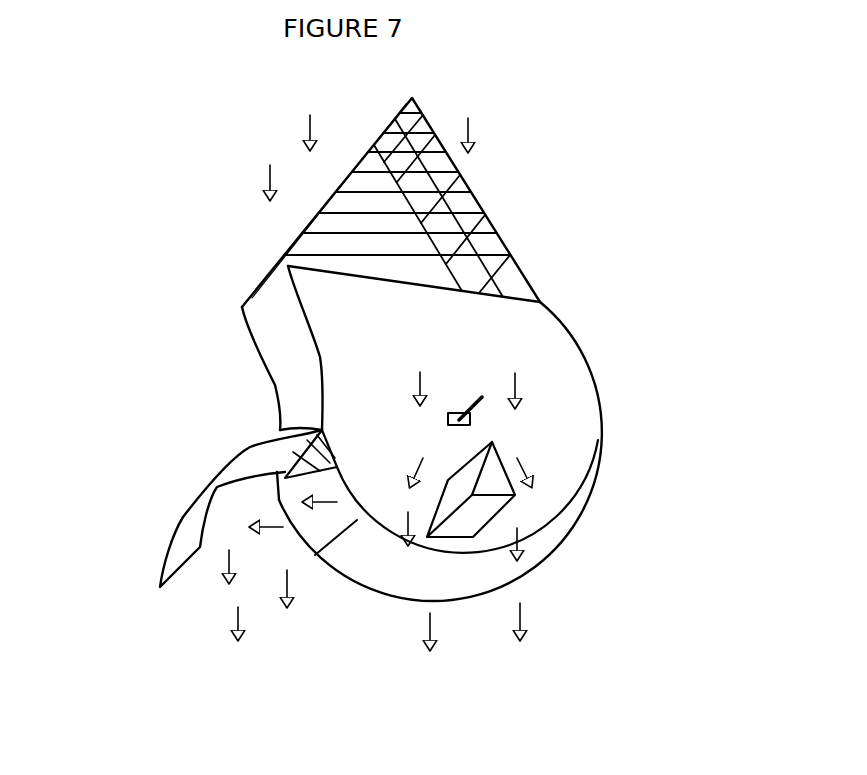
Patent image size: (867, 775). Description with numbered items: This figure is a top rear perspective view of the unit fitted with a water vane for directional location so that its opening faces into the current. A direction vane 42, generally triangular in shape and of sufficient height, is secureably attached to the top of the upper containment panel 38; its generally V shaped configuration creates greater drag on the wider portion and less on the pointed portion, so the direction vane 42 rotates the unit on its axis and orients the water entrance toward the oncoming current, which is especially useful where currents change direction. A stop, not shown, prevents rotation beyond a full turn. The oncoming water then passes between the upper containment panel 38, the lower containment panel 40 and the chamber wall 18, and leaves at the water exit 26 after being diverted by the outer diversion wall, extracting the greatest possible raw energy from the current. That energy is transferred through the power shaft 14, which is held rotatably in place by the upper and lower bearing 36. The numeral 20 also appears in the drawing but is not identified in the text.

The power shaft 14 is at (512, 258).
The chamber wall 18 is at (446, 552).
The apparatus 20 is at (100, 418).
The water exit 26 is at (168, 533).
The upper and lower bearing 36 is at (542, 295).
The upper containment panel 38 is at (528, 168).
The lower containment panel 40 is at (292, 450).
The direction vane 42 is at (537, 440).